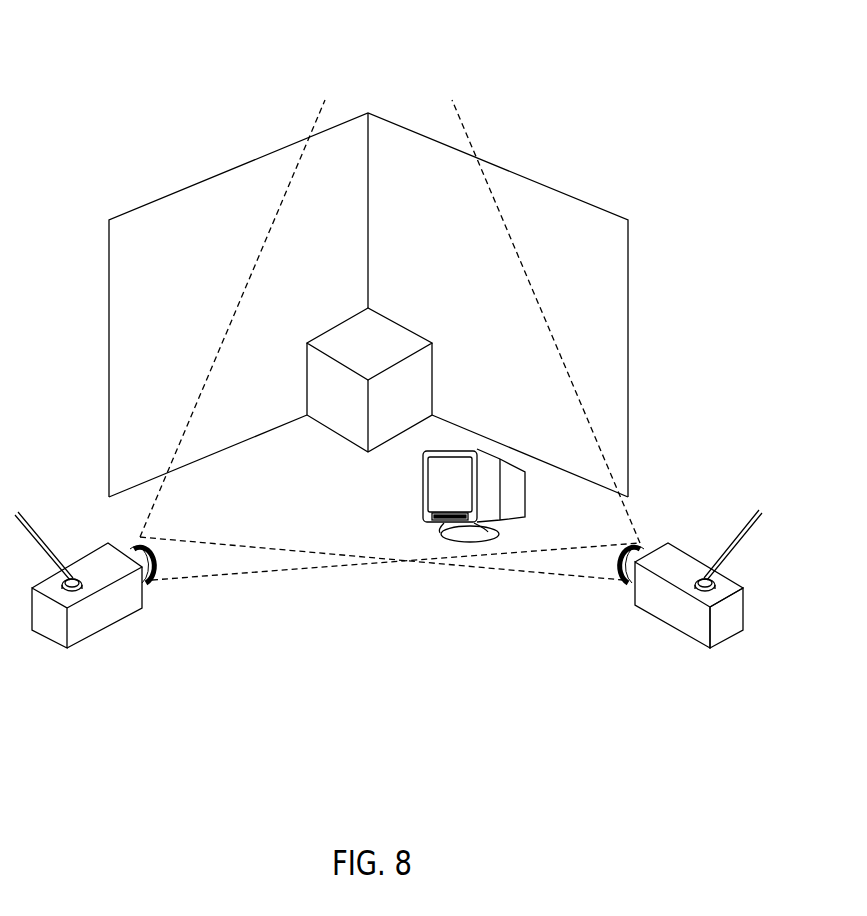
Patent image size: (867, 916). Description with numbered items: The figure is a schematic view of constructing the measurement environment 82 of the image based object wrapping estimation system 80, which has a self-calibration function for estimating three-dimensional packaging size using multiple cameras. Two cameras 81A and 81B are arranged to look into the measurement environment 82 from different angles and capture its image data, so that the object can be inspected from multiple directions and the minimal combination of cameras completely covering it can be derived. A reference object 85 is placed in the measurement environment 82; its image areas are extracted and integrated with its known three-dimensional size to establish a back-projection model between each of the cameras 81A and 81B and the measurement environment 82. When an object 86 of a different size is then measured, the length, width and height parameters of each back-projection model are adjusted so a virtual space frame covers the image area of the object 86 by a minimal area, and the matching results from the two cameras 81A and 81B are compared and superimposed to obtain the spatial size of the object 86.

The image based object wrapping estimation system 80 is at (262, 135).
The measurement environment 82 is at (468, 243).
The reference object 85 is at (338, 410).
The object 86 is at (440, 495).
The camera 81A is at (112, 603).
The camera 81B is at (663, 602).